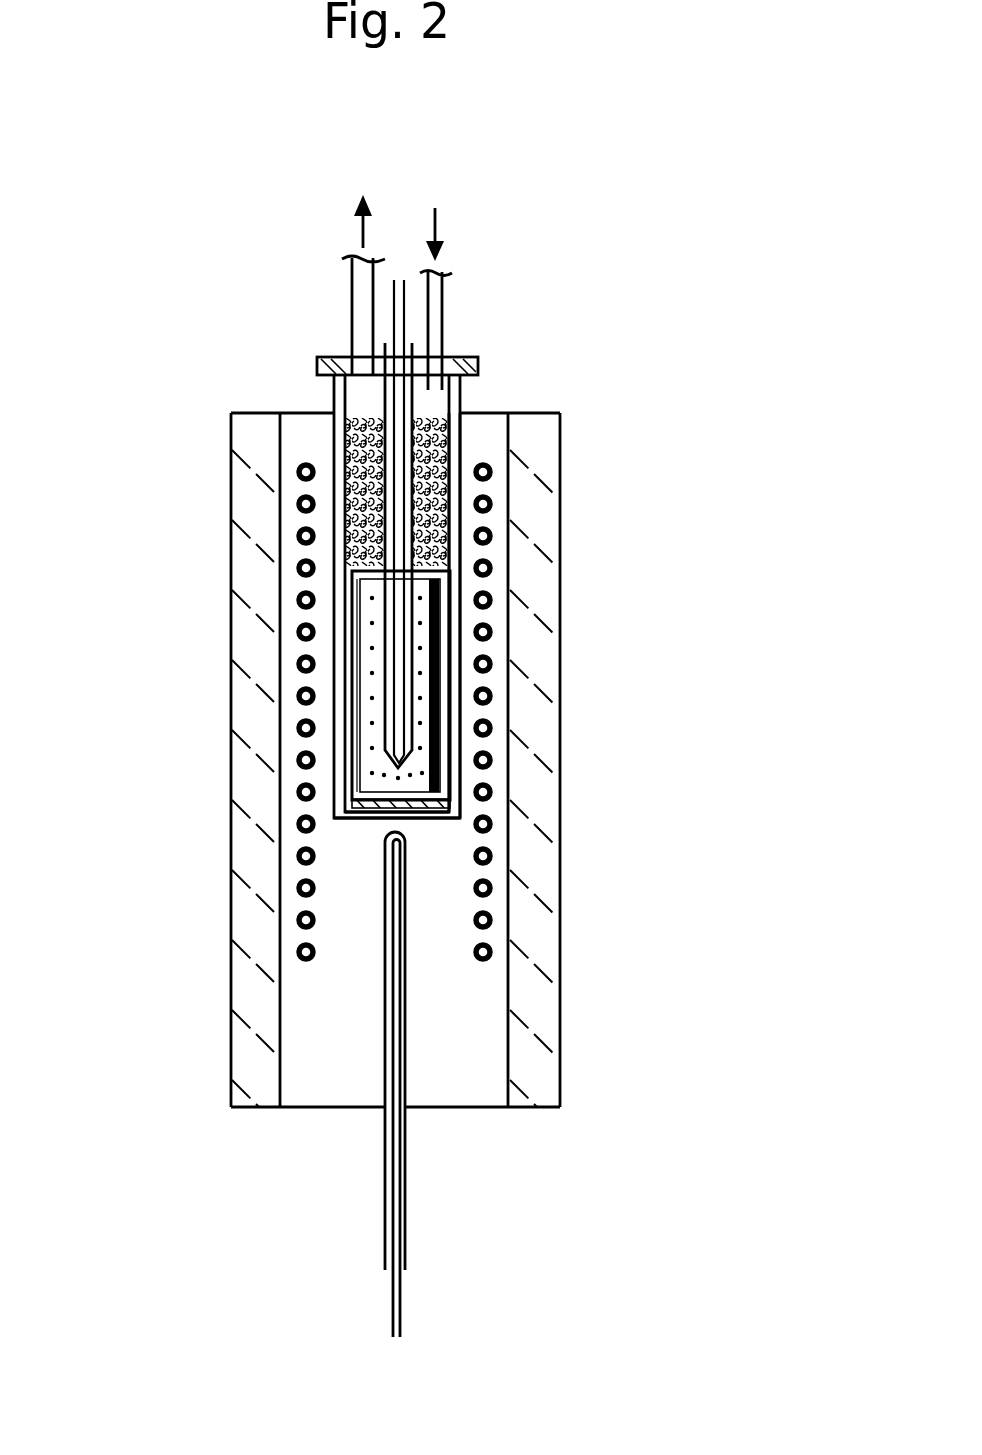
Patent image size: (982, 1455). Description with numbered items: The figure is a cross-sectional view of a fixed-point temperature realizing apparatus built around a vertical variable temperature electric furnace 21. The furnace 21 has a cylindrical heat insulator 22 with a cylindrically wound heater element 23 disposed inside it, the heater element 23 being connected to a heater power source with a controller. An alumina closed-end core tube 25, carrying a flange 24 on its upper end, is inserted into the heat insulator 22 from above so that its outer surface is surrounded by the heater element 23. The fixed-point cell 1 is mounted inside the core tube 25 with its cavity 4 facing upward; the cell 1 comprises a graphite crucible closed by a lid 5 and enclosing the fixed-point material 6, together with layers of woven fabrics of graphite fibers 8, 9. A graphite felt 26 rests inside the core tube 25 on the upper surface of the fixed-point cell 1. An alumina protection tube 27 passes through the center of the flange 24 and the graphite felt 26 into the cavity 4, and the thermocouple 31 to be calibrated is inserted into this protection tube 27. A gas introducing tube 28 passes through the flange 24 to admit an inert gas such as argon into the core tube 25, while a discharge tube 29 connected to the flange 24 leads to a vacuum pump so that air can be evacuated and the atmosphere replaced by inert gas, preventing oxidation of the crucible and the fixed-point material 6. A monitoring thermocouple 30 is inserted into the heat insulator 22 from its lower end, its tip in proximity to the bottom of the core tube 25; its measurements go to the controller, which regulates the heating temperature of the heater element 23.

The fixed-point cell 1 is at (472, 626).
The cavity 4 is at (386, 614).
The lid 5 is at (427, 805).
The fixed-point material 6 is at (420, 744).
The layer of woven fabrics of graphite fibers 8 is at (440, 688).
The layer of woven fabrics of graphite fibers 9 is at (380, 803).
The vertical variable temperature electric furnace 21 is at (205, 447).
The cylindrical heat insulator 22 is at (550, 970).
The heater element 23 is at (492, 793).
The flange 24 is at (480, 365).
The core tube 25 is at (466, 430).
The graphite felt 26 is at (455, 520).
The protection tube 27 is at (347, 385).
The gas introducing tube 28 is at (445, 316).
The discharge tube 29 is at (364, 308).
The monitoring thermocouple 30 is at (392, 1300).
The thermocouple to be calibrated 31 is at (399, 280).